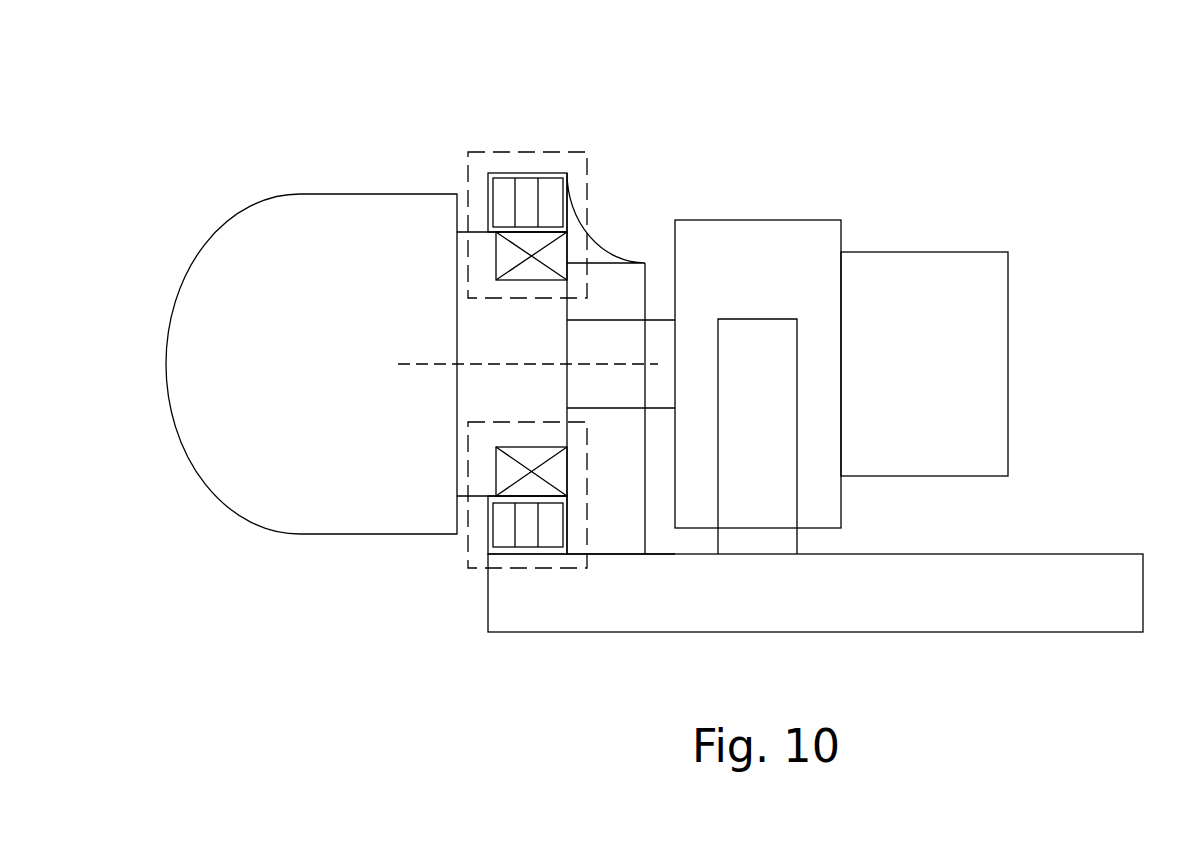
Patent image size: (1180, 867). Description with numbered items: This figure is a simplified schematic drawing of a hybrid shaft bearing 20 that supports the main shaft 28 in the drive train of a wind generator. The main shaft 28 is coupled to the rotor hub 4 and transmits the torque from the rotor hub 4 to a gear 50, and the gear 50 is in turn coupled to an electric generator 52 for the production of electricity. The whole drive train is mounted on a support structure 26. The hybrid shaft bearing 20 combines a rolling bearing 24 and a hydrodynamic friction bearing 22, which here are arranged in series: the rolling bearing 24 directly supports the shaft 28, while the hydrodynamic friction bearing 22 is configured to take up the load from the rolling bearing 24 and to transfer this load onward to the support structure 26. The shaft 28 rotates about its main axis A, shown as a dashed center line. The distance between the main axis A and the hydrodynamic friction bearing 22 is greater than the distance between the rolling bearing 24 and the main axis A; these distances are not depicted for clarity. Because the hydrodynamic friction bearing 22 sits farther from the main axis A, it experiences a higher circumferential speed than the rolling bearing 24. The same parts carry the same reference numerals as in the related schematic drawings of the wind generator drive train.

The rotor hub 4 is at (350, 194).
The hybrid shaft bearing 20 is at (513, 152).
The hydrodynamic friction bearing 22 is at (556, 197).
The rolling bearing 24 is at (556, 254).
The support structure 26 is at (1103, 553).
The main shaft 28 is at (553, 416).
The gear 50 is at (757, 220).
The electric generator 52 is at (912, 252).
The main axis A is at (420, 364).